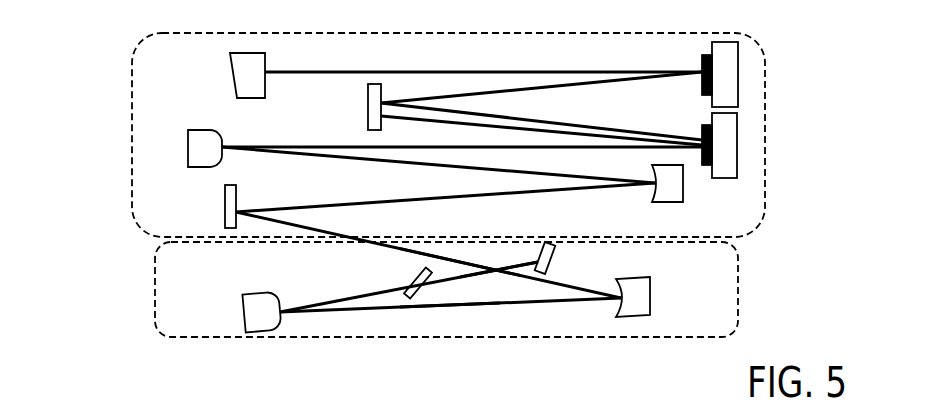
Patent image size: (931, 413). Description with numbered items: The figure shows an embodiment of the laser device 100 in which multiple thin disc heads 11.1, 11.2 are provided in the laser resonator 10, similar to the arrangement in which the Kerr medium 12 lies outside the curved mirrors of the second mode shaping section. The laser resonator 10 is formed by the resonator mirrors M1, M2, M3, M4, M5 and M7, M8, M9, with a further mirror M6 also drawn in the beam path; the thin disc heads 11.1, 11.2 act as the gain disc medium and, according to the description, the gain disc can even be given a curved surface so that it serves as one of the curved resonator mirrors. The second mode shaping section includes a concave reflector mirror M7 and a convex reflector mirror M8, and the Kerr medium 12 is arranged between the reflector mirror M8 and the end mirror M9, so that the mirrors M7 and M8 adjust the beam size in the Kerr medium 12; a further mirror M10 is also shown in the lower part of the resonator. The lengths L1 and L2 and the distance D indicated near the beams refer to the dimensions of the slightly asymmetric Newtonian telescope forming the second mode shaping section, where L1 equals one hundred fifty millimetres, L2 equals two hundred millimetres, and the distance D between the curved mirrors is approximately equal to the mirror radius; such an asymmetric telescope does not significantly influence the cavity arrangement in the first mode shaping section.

The laser device 100 is at (143, 74).
The laser resonator 10 is at (292, 195).
The thin disc head 11.1 is at (712, 146).
The thin disc head 11.2 is at (712, 72).
The Kerr medium 12 is at (428, 284).
The resonator mirror M1 is at (226, 75).
The resonator mirror M2 is at (694, 74).
The resonator mirror M3 is at (368, 110).
The resonator mirror M4 is at (694, 145).
The resonator mirror M5 is at (183, 148).
The mirror M6 is at (685, 190).
The concave reflector mirror M7 is at (207, 206).
The convex reflector mirror M8 is at (651, 297).
The end mirror M9 is at (247, 312).
The mirror M10 is at (572, 258).
The distance L1 is at (470, 262).
The distance L2 is at (518, 262).
The distance D is at (450, 320).